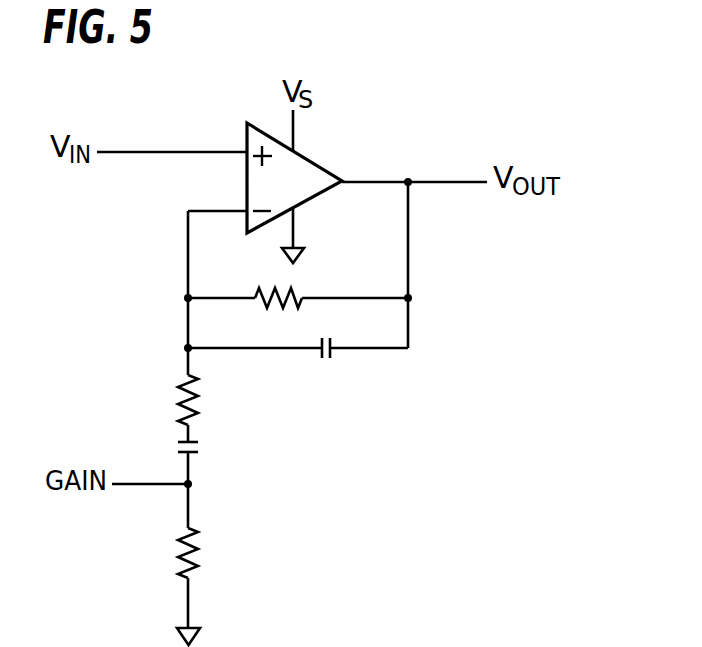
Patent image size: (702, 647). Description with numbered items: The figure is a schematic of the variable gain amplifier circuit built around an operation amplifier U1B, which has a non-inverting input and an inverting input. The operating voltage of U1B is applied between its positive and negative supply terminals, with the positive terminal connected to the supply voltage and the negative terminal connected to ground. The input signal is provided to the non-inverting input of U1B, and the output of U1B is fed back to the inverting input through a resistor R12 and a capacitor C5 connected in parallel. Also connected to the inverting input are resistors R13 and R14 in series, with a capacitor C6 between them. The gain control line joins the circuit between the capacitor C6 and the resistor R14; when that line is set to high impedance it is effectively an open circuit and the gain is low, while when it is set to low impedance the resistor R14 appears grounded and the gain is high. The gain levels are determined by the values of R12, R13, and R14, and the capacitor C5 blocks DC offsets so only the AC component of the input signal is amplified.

The operation amplifier U1B is at (302, 178).
The resistor R12 is at (278, 313).
The capacitor C5 is at (323, 364).
The resistor R13 is at (161, 400).
The capacitor C6 is at (205, 447).
The resistor R14 is at (161, 553).